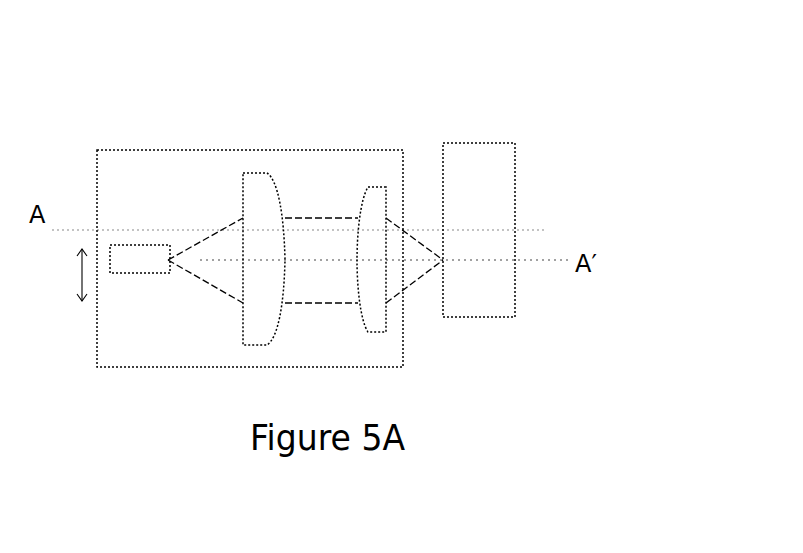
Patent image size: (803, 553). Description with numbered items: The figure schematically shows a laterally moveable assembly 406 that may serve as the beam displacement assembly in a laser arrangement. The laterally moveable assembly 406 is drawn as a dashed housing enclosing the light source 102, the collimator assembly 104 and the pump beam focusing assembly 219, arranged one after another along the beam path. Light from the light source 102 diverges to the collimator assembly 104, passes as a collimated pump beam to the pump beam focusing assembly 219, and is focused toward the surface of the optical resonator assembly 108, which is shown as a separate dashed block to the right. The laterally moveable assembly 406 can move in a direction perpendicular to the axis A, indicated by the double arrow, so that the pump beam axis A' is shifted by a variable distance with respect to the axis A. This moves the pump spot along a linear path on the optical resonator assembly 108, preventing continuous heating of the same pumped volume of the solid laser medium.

The laterally moveable assembly 406 is at (224, 226).
The light source 102 is at (107, 214).
The collimator assembly 104 is at (234, 228).
The pump beam focusing assembly 219 is at (346, 223).
The optical resonator assembly 108 is at (451, 197).